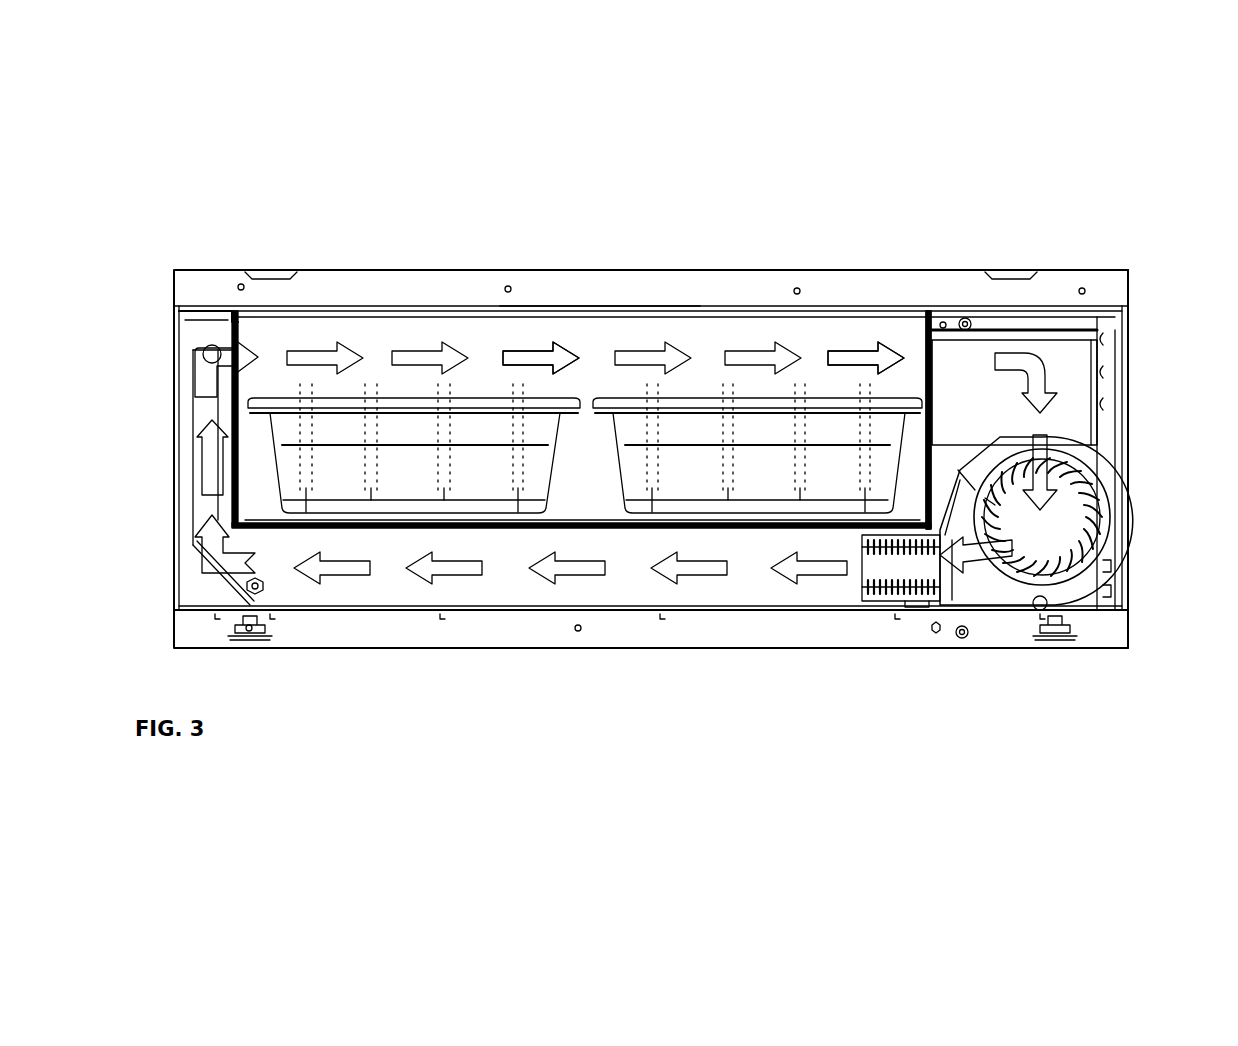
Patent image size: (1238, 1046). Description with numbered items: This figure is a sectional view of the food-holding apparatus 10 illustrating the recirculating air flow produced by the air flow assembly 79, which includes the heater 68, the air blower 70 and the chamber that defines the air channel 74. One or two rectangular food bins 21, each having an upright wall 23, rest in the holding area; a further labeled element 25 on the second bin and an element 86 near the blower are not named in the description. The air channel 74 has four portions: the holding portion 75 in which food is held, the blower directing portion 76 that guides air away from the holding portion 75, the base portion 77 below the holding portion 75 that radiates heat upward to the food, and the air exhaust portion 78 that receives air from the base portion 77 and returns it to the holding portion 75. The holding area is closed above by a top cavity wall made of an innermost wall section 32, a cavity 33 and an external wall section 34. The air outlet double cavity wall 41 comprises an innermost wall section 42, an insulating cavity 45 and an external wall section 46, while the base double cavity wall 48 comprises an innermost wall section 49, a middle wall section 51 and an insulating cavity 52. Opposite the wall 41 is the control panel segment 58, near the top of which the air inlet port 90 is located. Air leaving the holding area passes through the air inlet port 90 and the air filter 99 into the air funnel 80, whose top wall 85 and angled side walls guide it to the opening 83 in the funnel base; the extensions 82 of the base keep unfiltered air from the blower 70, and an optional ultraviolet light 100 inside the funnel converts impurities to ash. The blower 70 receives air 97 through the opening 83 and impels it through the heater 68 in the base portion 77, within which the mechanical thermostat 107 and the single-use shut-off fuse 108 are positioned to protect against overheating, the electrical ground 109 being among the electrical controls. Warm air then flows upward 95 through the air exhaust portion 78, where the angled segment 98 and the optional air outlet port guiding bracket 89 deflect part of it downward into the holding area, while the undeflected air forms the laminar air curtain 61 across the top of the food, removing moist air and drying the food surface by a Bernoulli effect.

The food-holding apparatus 10 is at (1068, 255).
The food bin 21 is at (485, 390).
The upright wall 23 is at (393, 492).
The second food tray 25 is at (372, 396).
The innermost wall section 32 is at (584, 305).
The cavity 33 is at (650, 285).
The external wall section 34 is at (728, 265).
The air outlet double cavity wall 41 is at (172, 580).
The innermost wall section 42 is at (241, 335).
The insulating cavity 45 is at (173, 410).
The external wall section 46 is at (167, 330).
The base double cavity wall 48 is at (537, 655).
The innermost wall section 49 is at (622, 530).
The middle wall section 51 is at (688, 620).
The insulating cavity 52 is at (293, 635).
The control panel segment 58 is at (1133, 316).
The air curtain 61 is at (442, 354).
The heater 68 is at (926, 568).
The air blower 70 is at (1055, 545).
The air channel 74 is at (838, 582).
The holding portion 75 is at (840, 353).
The blower directing portion 76 is at (1112, 380).
The base portion 77 is at (493, 577).
The air exhaust portion 78 is at (203, 391).
The air flow assembly 79 is at (573, 335).
The air funnel 80 is at (1075, 424).
The extensions 82 is at (968, 447).
The opening 83 is at (1030, 435).
The top wall 85 is at (1128, 327).
The fan outlet 86 is at (1102, 466).
The air outlet port guiding bracket 89 is at (243, 373).
The air inlet port 90 is at (934, 366).
The upward air flow 95 is at (203, 470).
The air 97 is at (1042, 502).
The angled segment 98 is at (183, 529).
The air filter 99 is at (919, 330).
The ultraviolet light 100 is at (965, 346).
The mechanical thermostat 107 is at (917, 535).
The single-use shut-off fuse 108 is at (941, 610).
The electrical ground 109 is at (1062, 672).